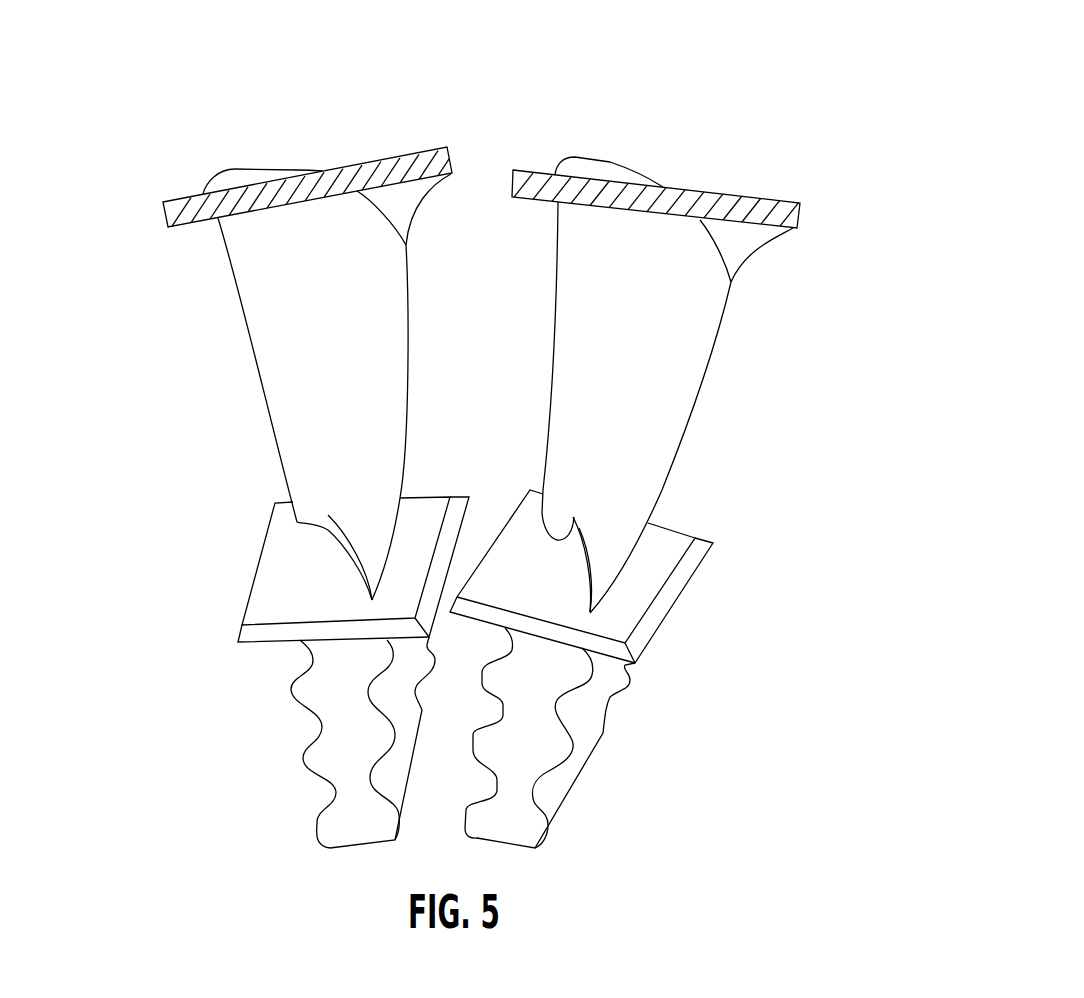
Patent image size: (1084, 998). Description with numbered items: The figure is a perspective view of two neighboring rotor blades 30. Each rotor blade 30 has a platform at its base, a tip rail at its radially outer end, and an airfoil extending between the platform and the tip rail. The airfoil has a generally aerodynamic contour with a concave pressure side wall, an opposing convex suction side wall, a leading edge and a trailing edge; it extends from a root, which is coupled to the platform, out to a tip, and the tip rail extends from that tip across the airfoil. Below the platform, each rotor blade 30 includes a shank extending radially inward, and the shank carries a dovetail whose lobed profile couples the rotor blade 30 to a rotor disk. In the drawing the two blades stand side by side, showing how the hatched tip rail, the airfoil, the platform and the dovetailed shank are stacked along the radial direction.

The rotor blade 30 is at (108, 125).